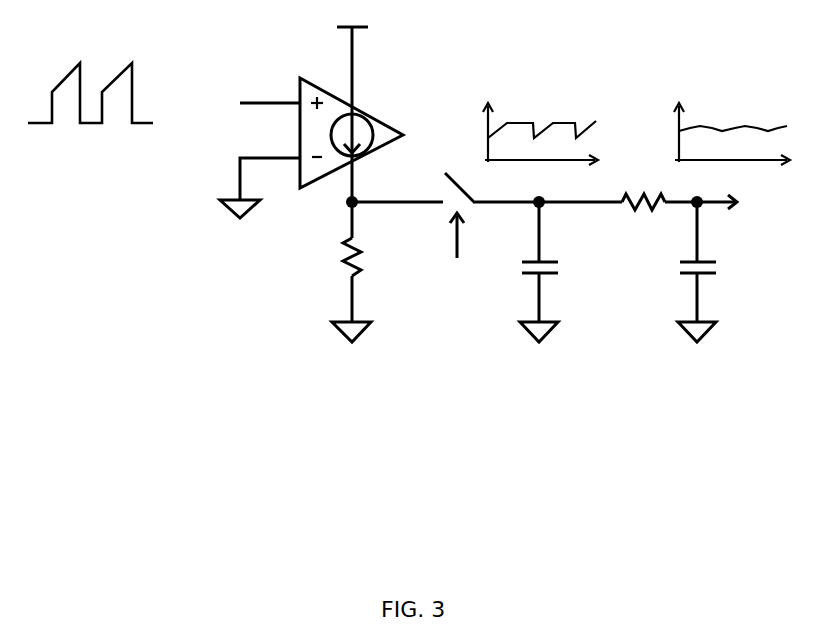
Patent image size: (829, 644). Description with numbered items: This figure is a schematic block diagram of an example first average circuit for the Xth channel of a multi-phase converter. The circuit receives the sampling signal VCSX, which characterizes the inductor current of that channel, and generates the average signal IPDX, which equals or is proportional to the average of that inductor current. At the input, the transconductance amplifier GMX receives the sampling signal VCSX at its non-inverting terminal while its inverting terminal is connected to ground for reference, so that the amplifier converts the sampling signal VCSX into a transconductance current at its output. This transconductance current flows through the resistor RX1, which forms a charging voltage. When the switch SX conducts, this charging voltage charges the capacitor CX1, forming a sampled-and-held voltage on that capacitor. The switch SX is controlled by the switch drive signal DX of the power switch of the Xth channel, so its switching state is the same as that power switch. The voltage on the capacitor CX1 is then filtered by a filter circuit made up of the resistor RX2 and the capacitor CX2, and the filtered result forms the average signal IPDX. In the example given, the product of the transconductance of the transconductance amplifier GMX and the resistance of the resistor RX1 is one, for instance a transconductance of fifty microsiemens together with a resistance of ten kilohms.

The transconductance amplifier GMX is at (337, 114).
The sampling signal VCSX is at (241, 103).
The switch SX is at (456, 167).
The switch drive signal DX is at (456, 252).
The resistor RX1 is at (334, 272).
The capacitor CX1 is at (519, 272).
The resistor RX2 is at (659, 185).
The capacitor CX2 is at (675, 269).
The average signal IPDX is at (733, 160).